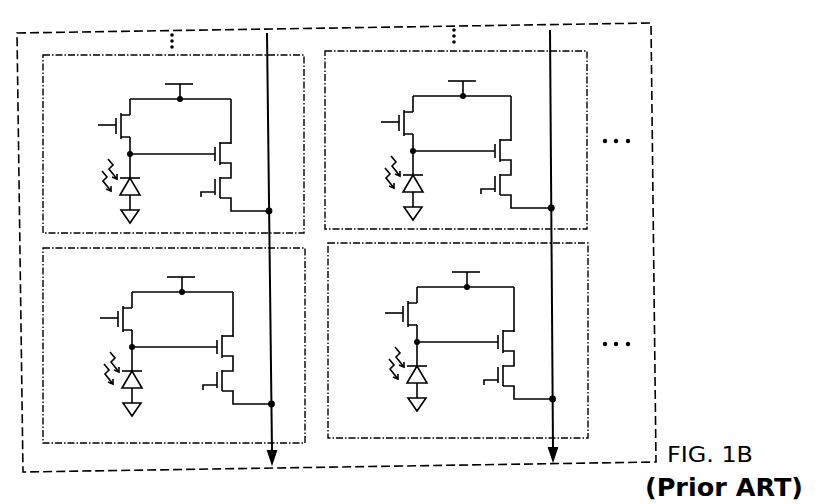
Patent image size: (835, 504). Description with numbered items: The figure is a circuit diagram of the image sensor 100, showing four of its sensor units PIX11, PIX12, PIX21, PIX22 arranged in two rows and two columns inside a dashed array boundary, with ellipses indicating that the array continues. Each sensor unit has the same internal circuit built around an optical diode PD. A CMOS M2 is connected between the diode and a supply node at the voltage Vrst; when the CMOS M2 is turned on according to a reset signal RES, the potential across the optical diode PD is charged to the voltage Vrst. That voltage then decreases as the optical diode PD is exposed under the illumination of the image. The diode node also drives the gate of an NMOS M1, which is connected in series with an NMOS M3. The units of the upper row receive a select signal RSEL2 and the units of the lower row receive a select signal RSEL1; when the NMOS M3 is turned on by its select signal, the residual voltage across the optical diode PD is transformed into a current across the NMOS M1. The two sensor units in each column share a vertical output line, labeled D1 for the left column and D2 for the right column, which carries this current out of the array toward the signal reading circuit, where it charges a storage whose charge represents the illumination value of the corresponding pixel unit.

The image sensor 100 is at (654, 238).
The sensor unit PIX11 is at (98, 275).
The sensor unit PIX12 is at (97, 84).
The sensor unit PIX21 is at (383, 270).
The sensor unit PIX22 is at (380, 79).
The voltage Vrst is at (322, 181).
The reset signal RES is at (234, 221).
The NMOS M1 is at (376, 255).
The CMOS M2 is at (280, 214).
The NMOS M3 is at (384, 289).
The optical diode PD is at (278, 283).
The select signal RSEL1 is at (343, 398).
The select signal RSEL2 is at (340, 206).
The column line D1 is at (282, 248).
The column line D2 is at (565, 245).